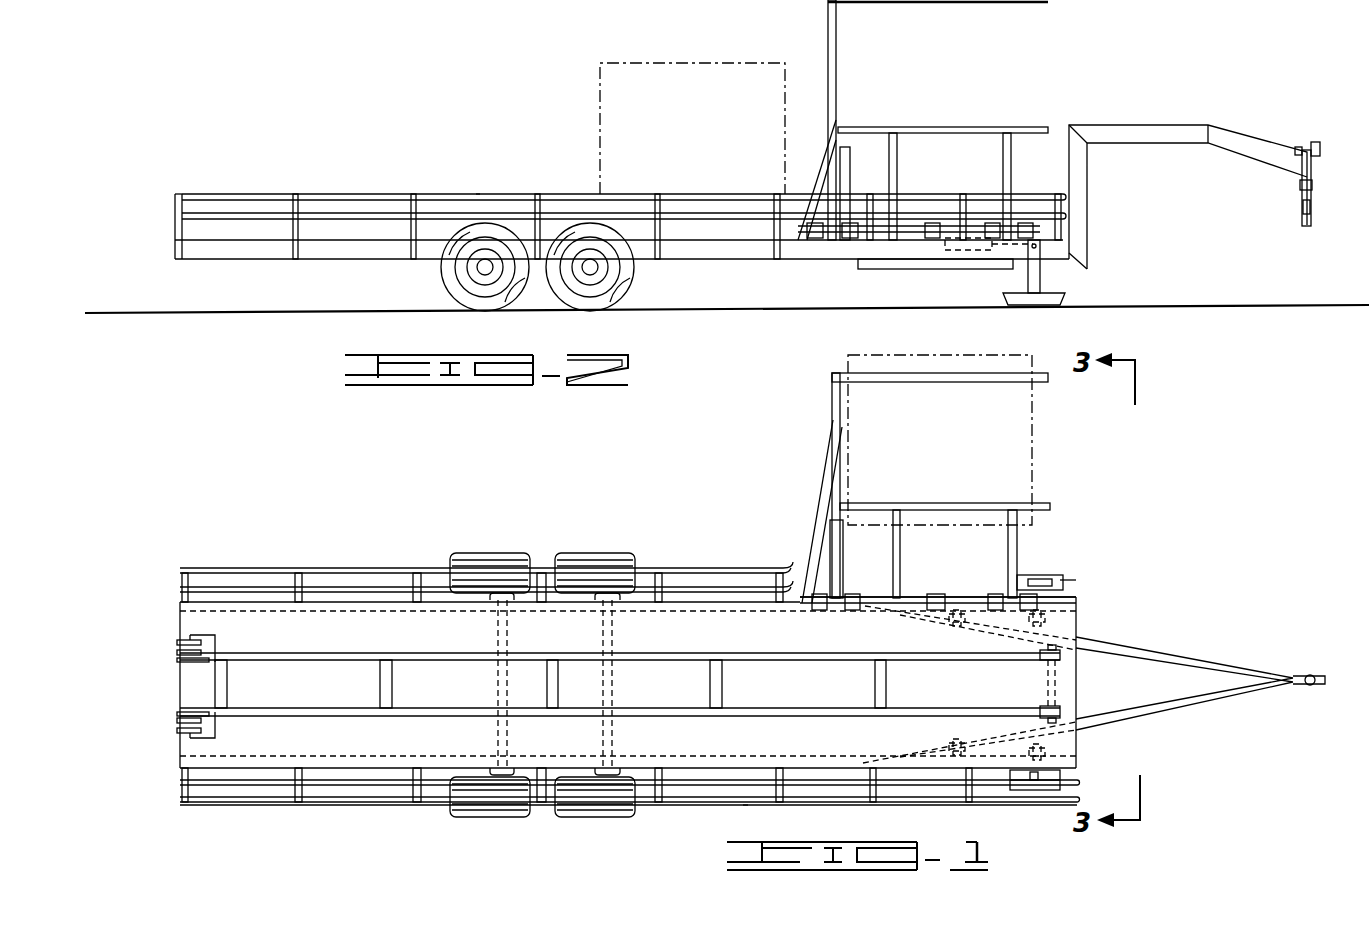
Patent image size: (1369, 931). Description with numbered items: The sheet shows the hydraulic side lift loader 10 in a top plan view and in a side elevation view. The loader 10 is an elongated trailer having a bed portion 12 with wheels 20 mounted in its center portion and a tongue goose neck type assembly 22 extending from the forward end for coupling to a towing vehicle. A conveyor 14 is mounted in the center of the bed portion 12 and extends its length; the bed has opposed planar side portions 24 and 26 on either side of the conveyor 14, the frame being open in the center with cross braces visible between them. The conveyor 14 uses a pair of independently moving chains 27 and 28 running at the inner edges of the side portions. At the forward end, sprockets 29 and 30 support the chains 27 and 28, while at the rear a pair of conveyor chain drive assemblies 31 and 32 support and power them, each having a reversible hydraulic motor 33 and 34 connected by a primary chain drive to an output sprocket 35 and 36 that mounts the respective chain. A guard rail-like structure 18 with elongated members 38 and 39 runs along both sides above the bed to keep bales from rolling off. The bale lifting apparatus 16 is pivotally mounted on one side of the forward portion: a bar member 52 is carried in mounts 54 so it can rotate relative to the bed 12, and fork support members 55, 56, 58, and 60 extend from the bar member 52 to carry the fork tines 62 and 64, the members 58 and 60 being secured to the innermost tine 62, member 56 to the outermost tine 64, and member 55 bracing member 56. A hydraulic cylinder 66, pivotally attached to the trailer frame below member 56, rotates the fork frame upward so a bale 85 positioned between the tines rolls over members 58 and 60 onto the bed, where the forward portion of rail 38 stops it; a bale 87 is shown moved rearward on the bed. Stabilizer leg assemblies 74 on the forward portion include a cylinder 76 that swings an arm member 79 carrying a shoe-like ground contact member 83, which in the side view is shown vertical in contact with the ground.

In FIG. 2, the loader 10 is at (392, 120).
In FIG. 1, the loader 10 is at (380, 520).
In FIG. 2, the bed portion 12 is at (696, 232).
In FIG. 1, the bed portion 12 is at (690, 780).
In FIG. 1, the conveyor 14 is at (432, 680).
In FIG. 2, the bale lifting apparatus 16 is at (879, 120).
In FIG. 2, the guard rail structure 18 is at (478, 180).
In FIG. 1, the guard rail structure 18 is at (745, 808).
In FIG. 2, the wheels 20 is at (596, 233).
In FIG. 1, the wheels 20 is at (596, 553).
In FIG. 2, the tongue goose neck assembly 22 is at (1185, 126).
In FIG. 1, the tongue goose neck assembly 22 is at (1210, 660).
In FIG. 1, the side portion 24 is at (442, 748).
In FIG. 1, the side portion 26 is at (322, 628).
In FIG. 1, the chain 27 is at (645, 710).
In FIG. 1, the chain 28 is at (655, 653).
In FIG. 1, the sprocket 29 is at (1062, 708).
In FIG. 1, the sprocket 30 is at (1062, 655).
In FIG. 1, the conveyor chain drive assembly 31 is at (161, 720).
In FIG. 1, the conveyor chain drive assembly 32 is at (160, 655).
In FIG. 1, the reversible hydraulic motor 33 is at (186, 735).
In FIG. 1, the reversible hydraulic motor 34 is at (186, 638).
In FIG. 1, the output sprocket 35 is at (190, 712).
In FIG. 1, the output sprocket 36 is at (190, 662).
In FIG. 2, the elongated member 38 is at (362, 193).
In FIG. 1, the elongated member 38 is at (820, 802).
In FIG. 1, the elongated member 39 is at (735, 567).
In FIG. 2, the bar member 52 is at (900, 233).
In FIG. 1, the bar member 52 is at (905, 606).
In FIG. 2, the mounts 54 is at (850, 238).
In FIG. 1, the mounts 54 is at (1024, 596).
In FIG. 2, the fork support member 55 is at (816, 132).
In FIG. 1, the fork support member 55 is at (823, 522).
In FIG. 2, the fork support member 56 is at (836, 42).
In FIG. 1, the fork support member 56 is at (840, 428).
In FIG. 2, the fork support member 58 is at (898, 158).
In FIG. 1, the fork support member 58 is at (901, 553).
In FIG. 2, the fork support member 60 is at (1012, 150).
In FIG. 1, the fork support member 60 is at (1018, 550).
In FIG. 2, the fork tine 62 is at (947, 128).
In FIG. 1, the fork tine 62 is at (935, 503).
In FIG. 2, the fork tine 64 is at (958, 4).
In FIG. 1, the fork tine 64 is at (934, 382).
In FIG. 2, the cylinder 66 is at (845, 160).
In FIG. 1, the cylinder 66 is at (844, 548).
In FIG. 2, the stabilizer leg assembly 74 is at (1080, 284).
In FIG. 1, the stabilizer leg assembly 74 is at (1090, 580).
In FIG. 2, the cylinder 76 is at (945, 222).
In FIG. 1, the cylinder 76 is at (975, 626).
In FIG. 2, the arm member 79 is at (1046, 292).
In FIG. 1, the arm member 79 is at (1036, 781).
In FIG. 2, the ground contact member 83 is at (1040, 305).
In FIG. 1, the ground contact member 83 is at (1056, 580).
In FIG. 1, the bale 85 is at (1035, 425).
In FIG. 2, the bale 87 is at (600, 115).